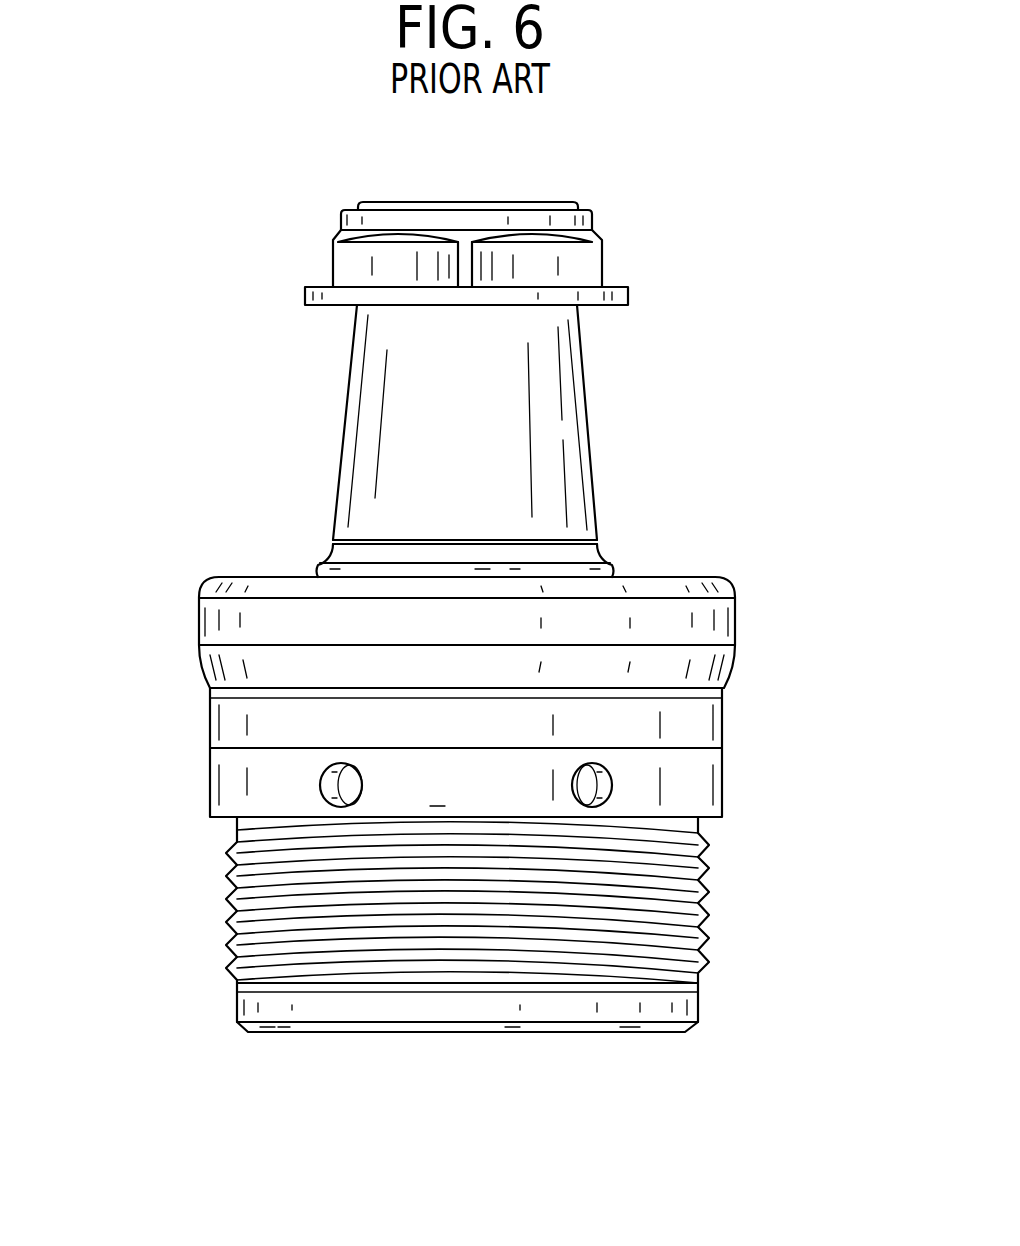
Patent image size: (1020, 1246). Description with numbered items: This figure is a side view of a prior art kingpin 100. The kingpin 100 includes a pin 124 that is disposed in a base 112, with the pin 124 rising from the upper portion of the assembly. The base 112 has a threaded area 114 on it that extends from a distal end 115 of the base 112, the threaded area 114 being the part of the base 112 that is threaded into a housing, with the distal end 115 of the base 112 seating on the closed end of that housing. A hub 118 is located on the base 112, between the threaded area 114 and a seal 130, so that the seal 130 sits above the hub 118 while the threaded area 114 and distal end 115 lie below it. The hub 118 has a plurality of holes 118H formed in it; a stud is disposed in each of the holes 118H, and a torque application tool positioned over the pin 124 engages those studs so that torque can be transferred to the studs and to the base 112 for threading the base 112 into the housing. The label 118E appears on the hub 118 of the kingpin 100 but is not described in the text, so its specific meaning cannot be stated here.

The kingpin 100 is at (777, 192).
The base 112 is at (845, 743).
The threaded area 114 is at (752, 818).
The distal end 115 is at (367, 1033).
The hub 118 is at (684, 780).
The housing band edge 118E is at (433, 790).
The holes 118H is at (320, 780).
The pin 124 is at (620, 412).
The seal 130 is at (752, 622).